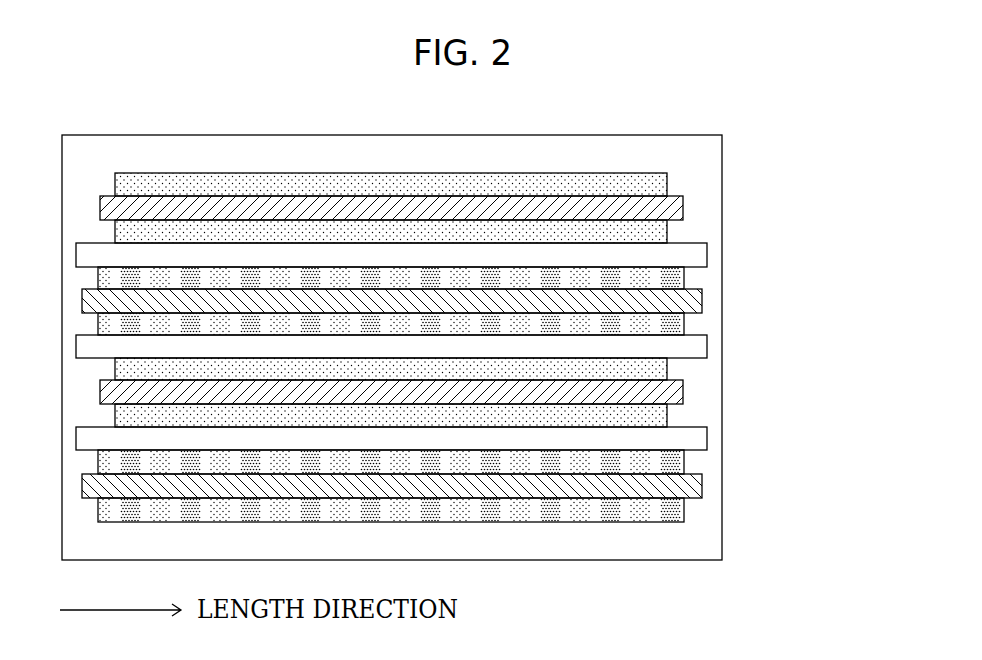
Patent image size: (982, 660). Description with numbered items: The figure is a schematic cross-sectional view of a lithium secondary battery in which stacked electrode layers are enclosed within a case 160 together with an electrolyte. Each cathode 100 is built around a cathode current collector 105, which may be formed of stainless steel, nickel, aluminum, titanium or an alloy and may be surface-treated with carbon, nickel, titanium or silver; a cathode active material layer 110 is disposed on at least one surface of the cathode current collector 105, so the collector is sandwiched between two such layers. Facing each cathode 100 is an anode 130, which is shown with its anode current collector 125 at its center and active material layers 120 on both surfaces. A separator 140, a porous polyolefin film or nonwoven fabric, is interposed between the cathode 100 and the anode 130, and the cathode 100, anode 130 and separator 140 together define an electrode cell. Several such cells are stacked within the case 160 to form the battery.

The cathode 100 is at (482, 300).
The cathode current collector 105 is at (683, 206).
The cathode active material layer 110 is at (667, 180).
The second active material layer 120 is at (684, 275).
The anode current collector 125 is at (702, 300).
The anode 130 is at (473, 394).
The separator 140 is at (585, 252).
The case 160 is at (722, 487).